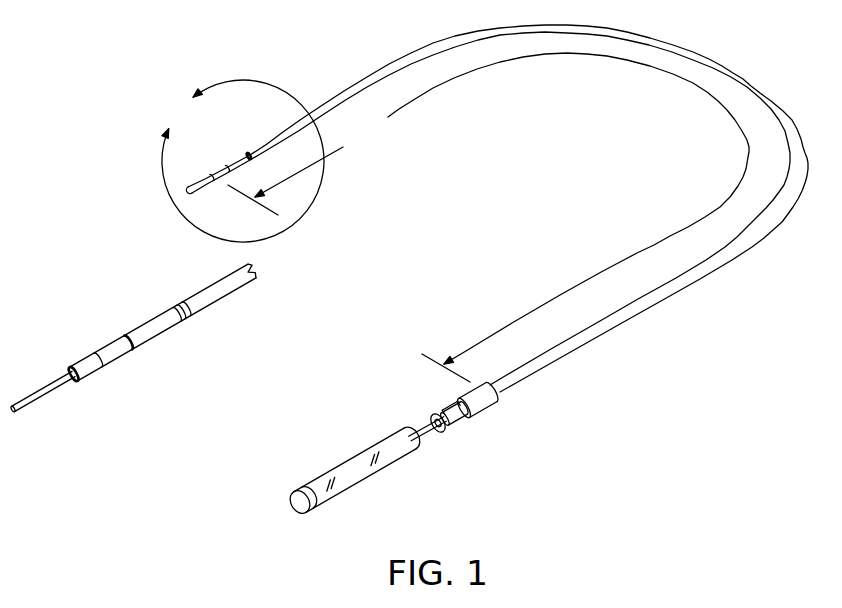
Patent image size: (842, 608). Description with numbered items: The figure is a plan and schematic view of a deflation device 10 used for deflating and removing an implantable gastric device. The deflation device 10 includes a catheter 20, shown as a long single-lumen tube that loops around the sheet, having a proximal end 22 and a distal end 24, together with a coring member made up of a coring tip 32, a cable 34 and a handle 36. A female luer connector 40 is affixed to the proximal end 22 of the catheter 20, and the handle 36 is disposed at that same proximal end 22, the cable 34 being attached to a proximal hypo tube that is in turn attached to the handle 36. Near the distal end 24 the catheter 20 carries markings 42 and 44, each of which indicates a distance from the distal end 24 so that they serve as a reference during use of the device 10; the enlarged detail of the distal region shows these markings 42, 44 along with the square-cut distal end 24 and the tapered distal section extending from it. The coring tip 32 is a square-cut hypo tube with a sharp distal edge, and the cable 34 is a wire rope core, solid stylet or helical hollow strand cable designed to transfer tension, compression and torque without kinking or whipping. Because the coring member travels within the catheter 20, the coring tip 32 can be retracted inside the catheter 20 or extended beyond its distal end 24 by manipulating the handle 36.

The deflation device 10 is at (93, 112).
The catheter 20 is at (572, 353).
The proximal end 22 is at (498, 401).
The distal end 24 is at (72, 368).
The coring tip 32 is at (18, 413).
The cable 34 is at (423, 438).
The handle 36 is at (383, 468).
The female luer connector 40 is at (433, 412).
The marking 42 is at (132, 350).
The marking 44 is at (185, 317).